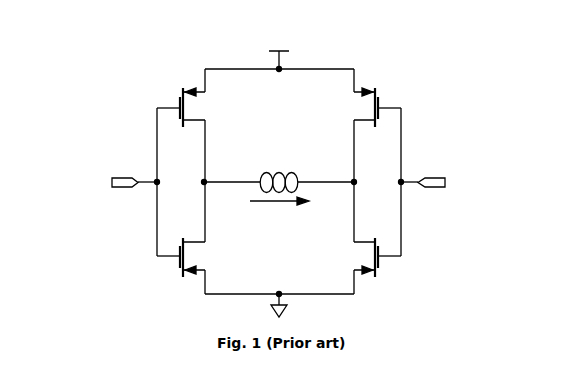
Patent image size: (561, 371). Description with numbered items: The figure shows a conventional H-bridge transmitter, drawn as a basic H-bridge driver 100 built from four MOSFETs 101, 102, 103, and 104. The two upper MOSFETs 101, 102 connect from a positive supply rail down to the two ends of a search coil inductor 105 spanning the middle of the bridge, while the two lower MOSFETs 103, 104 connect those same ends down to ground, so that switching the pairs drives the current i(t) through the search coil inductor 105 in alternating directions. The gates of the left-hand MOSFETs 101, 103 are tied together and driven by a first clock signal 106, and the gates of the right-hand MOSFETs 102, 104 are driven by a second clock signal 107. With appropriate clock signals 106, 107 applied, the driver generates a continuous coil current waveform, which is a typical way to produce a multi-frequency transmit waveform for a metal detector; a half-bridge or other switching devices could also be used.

The H-bridge driver 100 is at (367, 73).
The MOSFET 101 is at (201, 107).
The MOSFET 102 is at (357, 107).
The MOSFET 103 is at (201, 262).
The MOSFET 104 is at (357, 262).
The search coil inductor 105 is at (278, 172).
The clock signal 106 is at (113, 170).
The clock signal 107 is at (445, 170).